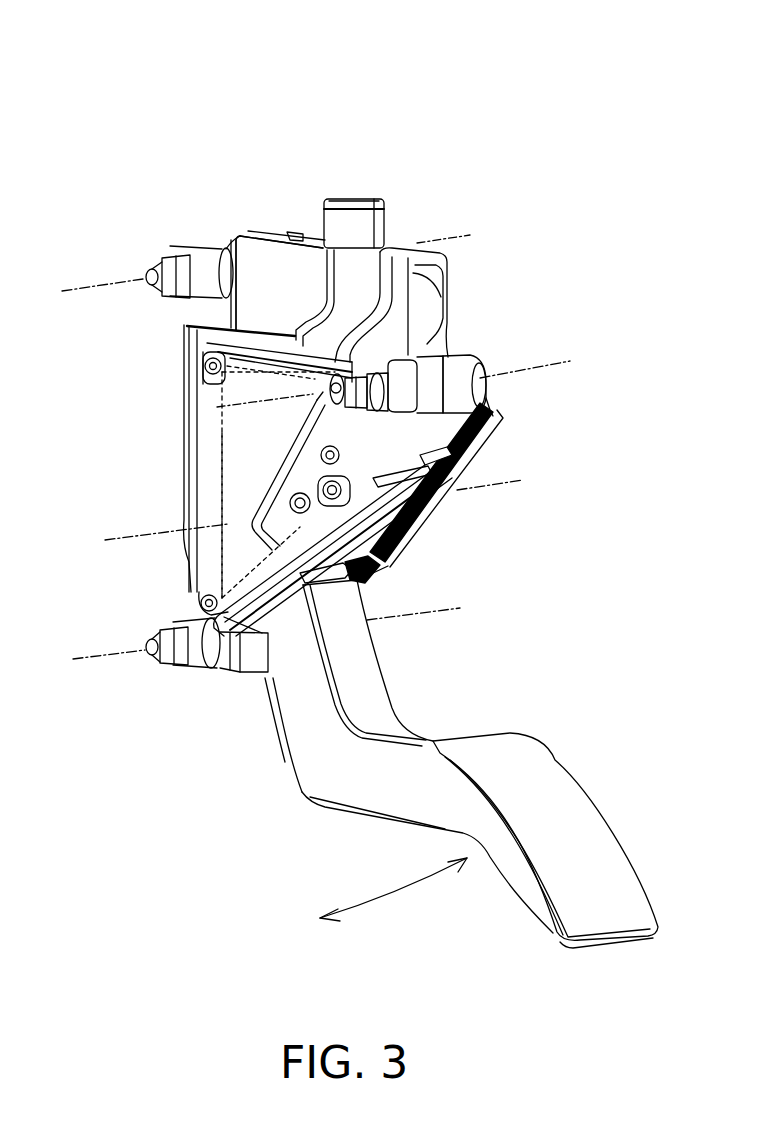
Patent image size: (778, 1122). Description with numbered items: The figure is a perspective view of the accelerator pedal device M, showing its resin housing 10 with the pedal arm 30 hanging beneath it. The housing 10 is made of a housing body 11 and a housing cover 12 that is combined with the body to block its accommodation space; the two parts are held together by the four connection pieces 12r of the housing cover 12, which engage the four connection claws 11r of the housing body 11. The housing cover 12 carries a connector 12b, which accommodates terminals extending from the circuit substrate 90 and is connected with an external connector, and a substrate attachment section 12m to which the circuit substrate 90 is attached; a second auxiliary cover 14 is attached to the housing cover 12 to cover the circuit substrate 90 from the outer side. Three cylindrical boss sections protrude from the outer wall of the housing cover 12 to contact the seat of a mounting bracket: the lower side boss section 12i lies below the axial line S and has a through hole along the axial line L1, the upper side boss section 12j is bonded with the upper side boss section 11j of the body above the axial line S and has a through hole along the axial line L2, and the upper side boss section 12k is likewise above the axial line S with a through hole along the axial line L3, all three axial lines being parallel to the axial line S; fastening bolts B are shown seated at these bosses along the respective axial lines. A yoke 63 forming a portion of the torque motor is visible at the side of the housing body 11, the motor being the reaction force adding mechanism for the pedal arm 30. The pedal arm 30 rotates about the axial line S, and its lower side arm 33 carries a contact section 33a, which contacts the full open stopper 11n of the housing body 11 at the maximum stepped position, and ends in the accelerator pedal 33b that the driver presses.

The accelerator pedal device M is at (237, 175).
The housing 10 is at (365, 204).
The housing body 11 is at (398, 248).
The upper side boss section 11j is at (462, 370).
The full open stopper 11n is at (252, 678).
The connection claws 11r is at (444, 508).
The housing cover 12 is at (250, 230).
The connector 12b is at (352, 197).
The lower side boss section 12i is at (200, 660).
The upper side boss section 12j is at (403, 378).
The upper side boss section 12k is at (197, 243).
The substrate attachment section 12m is at (203, 372).
The connection pieces 12r is at (300, 233).
The second auxiliary cover 14 is at (205, 395).
The pedal arm 30 is at (312, 802).
The lower side arm 33 is at (365, 665).
The contact section 33a is at (269, 676).
The accelerator pedal 33b is at (550, 764).
The yoke 63 is at (478, 445).
The circuit substrate 90 is at (222, 433).
The bolt B is at (148, 274).
The axial line S is at (150, 532).
The axial line L1 is at (92, 660).
The axial line L2 is at (545, 375).
The axial line L3 is at (77, 290).